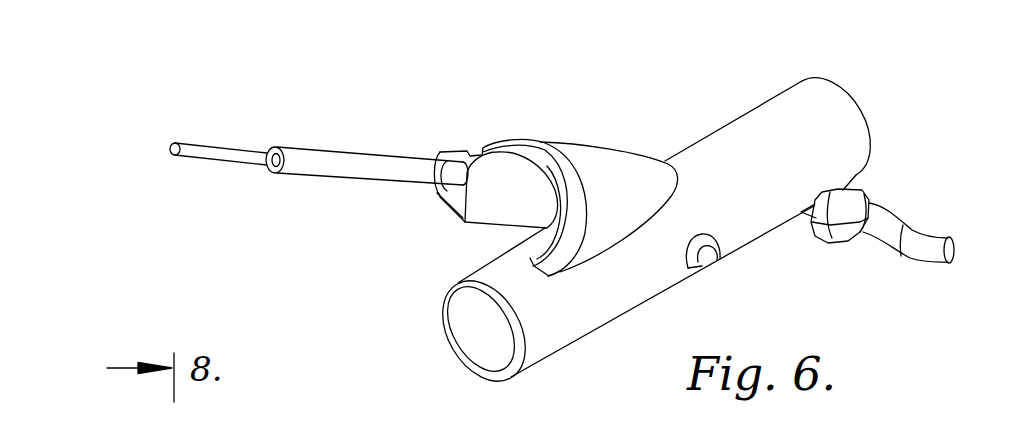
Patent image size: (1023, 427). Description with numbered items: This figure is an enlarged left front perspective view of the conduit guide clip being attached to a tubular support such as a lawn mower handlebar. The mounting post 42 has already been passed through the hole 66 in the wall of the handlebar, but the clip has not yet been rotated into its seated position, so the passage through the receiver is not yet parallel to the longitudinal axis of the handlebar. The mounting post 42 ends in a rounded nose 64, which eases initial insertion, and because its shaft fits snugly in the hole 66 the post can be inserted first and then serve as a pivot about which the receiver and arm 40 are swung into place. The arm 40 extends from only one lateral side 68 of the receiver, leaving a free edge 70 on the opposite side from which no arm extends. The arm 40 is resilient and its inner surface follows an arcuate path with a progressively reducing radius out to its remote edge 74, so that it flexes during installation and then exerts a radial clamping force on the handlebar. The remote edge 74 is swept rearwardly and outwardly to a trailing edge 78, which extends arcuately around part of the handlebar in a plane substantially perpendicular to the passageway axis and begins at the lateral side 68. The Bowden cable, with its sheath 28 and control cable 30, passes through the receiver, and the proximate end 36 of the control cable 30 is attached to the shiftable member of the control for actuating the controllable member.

The sheath 28 is at (332, 150).
The control cable 30 is at (220, 147).
The proximate end 36 is at (893, 215).
The arm 40 is at (620, 158).
The mounting post 42 is at (708, 250).
The rounded nose 64 is at (700, 268).
The hole 66 is at (698, 237).
The lateral side 68 is at (473, 150).
The free edge 70 is at (465, 223).
The remote edge 74 is at (588, 265).
The trailing edge 78 is at (538, 157).